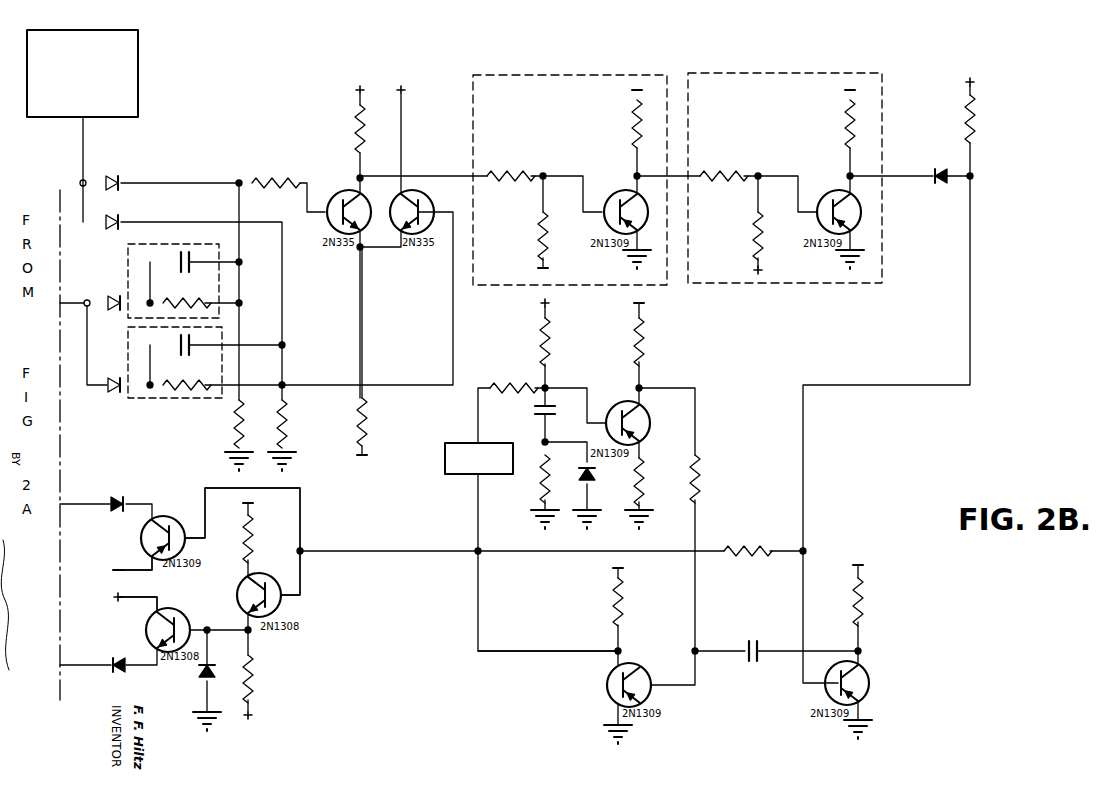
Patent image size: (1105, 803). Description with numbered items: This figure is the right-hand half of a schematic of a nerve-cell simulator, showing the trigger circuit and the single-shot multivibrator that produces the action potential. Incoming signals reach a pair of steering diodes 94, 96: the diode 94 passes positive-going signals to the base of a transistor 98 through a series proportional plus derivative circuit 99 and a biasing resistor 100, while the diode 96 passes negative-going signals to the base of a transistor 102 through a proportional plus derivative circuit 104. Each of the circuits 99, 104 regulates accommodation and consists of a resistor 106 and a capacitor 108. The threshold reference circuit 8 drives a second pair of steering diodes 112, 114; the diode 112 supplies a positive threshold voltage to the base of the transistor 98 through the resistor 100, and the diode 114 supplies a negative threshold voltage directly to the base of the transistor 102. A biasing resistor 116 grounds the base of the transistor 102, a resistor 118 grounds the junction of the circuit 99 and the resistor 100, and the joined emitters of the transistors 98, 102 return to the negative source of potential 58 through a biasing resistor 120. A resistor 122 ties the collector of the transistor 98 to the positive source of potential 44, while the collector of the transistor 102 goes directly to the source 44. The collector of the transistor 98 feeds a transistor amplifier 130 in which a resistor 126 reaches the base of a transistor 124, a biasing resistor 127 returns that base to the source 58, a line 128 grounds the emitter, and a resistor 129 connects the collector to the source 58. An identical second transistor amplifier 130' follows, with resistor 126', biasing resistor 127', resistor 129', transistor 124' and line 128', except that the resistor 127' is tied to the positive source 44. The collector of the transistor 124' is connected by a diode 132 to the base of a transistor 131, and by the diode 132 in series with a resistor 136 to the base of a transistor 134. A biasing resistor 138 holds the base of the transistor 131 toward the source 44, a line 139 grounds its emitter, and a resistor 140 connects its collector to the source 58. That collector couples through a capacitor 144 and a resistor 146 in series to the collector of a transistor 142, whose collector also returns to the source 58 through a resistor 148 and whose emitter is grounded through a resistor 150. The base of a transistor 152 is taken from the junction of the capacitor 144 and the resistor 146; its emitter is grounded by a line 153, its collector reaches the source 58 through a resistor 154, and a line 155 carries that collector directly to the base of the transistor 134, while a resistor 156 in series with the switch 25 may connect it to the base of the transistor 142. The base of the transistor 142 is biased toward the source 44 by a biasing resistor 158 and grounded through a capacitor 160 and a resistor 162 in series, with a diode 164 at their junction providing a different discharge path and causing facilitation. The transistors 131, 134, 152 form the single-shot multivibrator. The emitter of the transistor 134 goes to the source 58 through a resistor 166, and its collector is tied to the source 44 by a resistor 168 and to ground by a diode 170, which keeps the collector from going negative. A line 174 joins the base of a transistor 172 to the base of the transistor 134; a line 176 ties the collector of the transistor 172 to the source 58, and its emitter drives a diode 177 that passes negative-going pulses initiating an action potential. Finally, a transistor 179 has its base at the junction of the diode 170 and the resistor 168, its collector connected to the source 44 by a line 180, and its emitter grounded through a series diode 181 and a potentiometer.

The threshold reference circuit 8 is at (27, 50).
The steering diode 112 is at (115, 179).
The steering diode 114 is at (115, 218).
The biasing resistor 100 is at (278, 178).
The transistor 98 is at (341, 202).
The transistor 102 is at (425, 199).
The resistor 122 is at (356, 126).
The positive source of potential 44 is at (354, 92).
The proportional plus derivative circuit 99 is at (126, 263).
The capacitor 108 is at (182, 254).
The steering diode 94 is at (116, 297).
The resistor 106 is at (166, 308).
The proportional plus derivative circuit 104 is at (125, 356).
The steering diode 96 is at (115, 393).
The resistor 118 is at (236, 423).
The biasing resistor 116 is at (278, 408).
The biasing resistor 120 is at (358, 416).
The negative source of potential 58 is at (634, 90).
The transistor amplifier 130 is at (570, 159).
The resistor 126 is at (510, 172).
The biasing resistor 127 is at (529, 236).
The resistor 129 is at (624, 124).
The transistor 124 is at (620, 202).
The line 128 is at (646, 246).
The second transistor amplifier 130' is at (785, 157).
The resistor 126' is at (723, 172).
The biasing resistor 127' is at (742, 236).
The resistor 129' is at (835, 124).
The transistor 124' is at (833, 202).
The line 128' is at (861, 246).
The diode 132 is at (937, 168).
The biasing resistor 138 is at (965, 113).
The biasing resistor 158 is at (540, 333).
The resistor 148 is at (635, 333).
The resistor 156 is at (516, 384).
The capacitor 160 is at (536, 416).
The transistor 142 is at (622, 406).
The resistor 146 is at (691, 466).
The resistor 150 is at (634, 476).
The resistor 162 is at (540, 490).
The diode 164 is at (591, 480).
The switch 25 is at (463, 443).
The resistor 136 is at (738, 546).
The resistor 154 is at (613, 599).
The line 155 is at (547, 651).
The transistor 152 is at (632, 668).
The line 153 is at (616, 714).
The capacitor 144 is at (751, 658).
The resistor 140 is at (853, 590).
The transistor 131 is at (862, 674).
The line 139 is at (861, 710).
The diode 177 is at (116, 499).
The transistor 172 is at (178, 520).
The line 176 is at (149, 566).
The line 174 is at (210, 488).
The resistor 166 is at (243, 526).
The transistor 134 is at (272, 582).
The line 180 is at (138, 589).
The transistor 179 is at (182, 612).
The diode 181 is at (117, 659).
The diode 170 is at (198, 678).
The resistor 168 is at (244, 691).